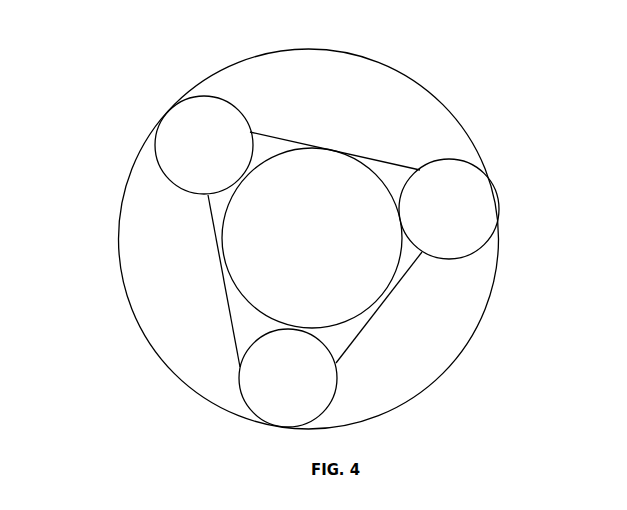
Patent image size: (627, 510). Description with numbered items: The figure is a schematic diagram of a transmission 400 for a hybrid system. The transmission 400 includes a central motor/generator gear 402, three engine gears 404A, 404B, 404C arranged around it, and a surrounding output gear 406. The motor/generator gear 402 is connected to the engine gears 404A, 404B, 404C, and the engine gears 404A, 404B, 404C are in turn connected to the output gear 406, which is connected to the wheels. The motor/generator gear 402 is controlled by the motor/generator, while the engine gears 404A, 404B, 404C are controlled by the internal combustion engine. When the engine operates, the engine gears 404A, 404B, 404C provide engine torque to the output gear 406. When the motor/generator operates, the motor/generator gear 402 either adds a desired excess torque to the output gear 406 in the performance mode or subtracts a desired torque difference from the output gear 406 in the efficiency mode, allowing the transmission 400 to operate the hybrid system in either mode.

The transmission 400 is at (352, 239).
The motor/generator gear 402 is at (295, 280).
The engine gear 404A is at (242, 108).
The engine gear 404B is at (239, 374).
The engine gear 404C is at (445, 158).
The output gear 406 is at (470, 356).